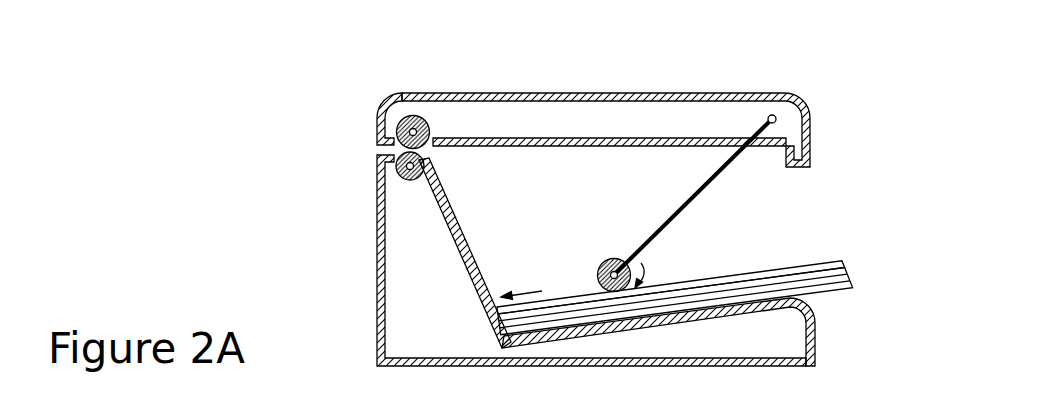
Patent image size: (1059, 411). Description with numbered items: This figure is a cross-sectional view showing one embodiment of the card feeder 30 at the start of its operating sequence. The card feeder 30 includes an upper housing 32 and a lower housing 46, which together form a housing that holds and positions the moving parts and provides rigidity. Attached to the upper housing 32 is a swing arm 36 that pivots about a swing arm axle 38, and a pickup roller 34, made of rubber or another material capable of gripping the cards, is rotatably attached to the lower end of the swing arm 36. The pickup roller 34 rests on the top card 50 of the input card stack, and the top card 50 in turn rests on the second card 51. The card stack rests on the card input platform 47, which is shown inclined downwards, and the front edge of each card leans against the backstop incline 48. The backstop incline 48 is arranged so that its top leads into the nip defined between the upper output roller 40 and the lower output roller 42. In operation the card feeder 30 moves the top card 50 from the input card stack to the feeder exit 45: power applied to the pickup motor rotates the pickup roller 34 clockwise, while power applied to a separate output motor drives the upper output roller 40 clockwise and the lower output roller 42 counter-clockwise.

The card feeder 30 is at (522, 66).
The upper housing 32 is at (629, 112).
The pickup roller 34 is at (598, 267).
The swing arm 36 is at (718, 187).
The swing arm axle 38 is at (771, 113).
The upper output roller 40 is at (416, 116).
The lower output roller 42 is at (398, 175).
The feeder exit 45 is at (380, 146).
The lower housing 46 is at (410, 293).
The card input platform 47 is at (762, 312).
The backstop incline 48 is at (444, 216).
The top card 50 is at (840, 262).
The second card 51 is at (848, 274).